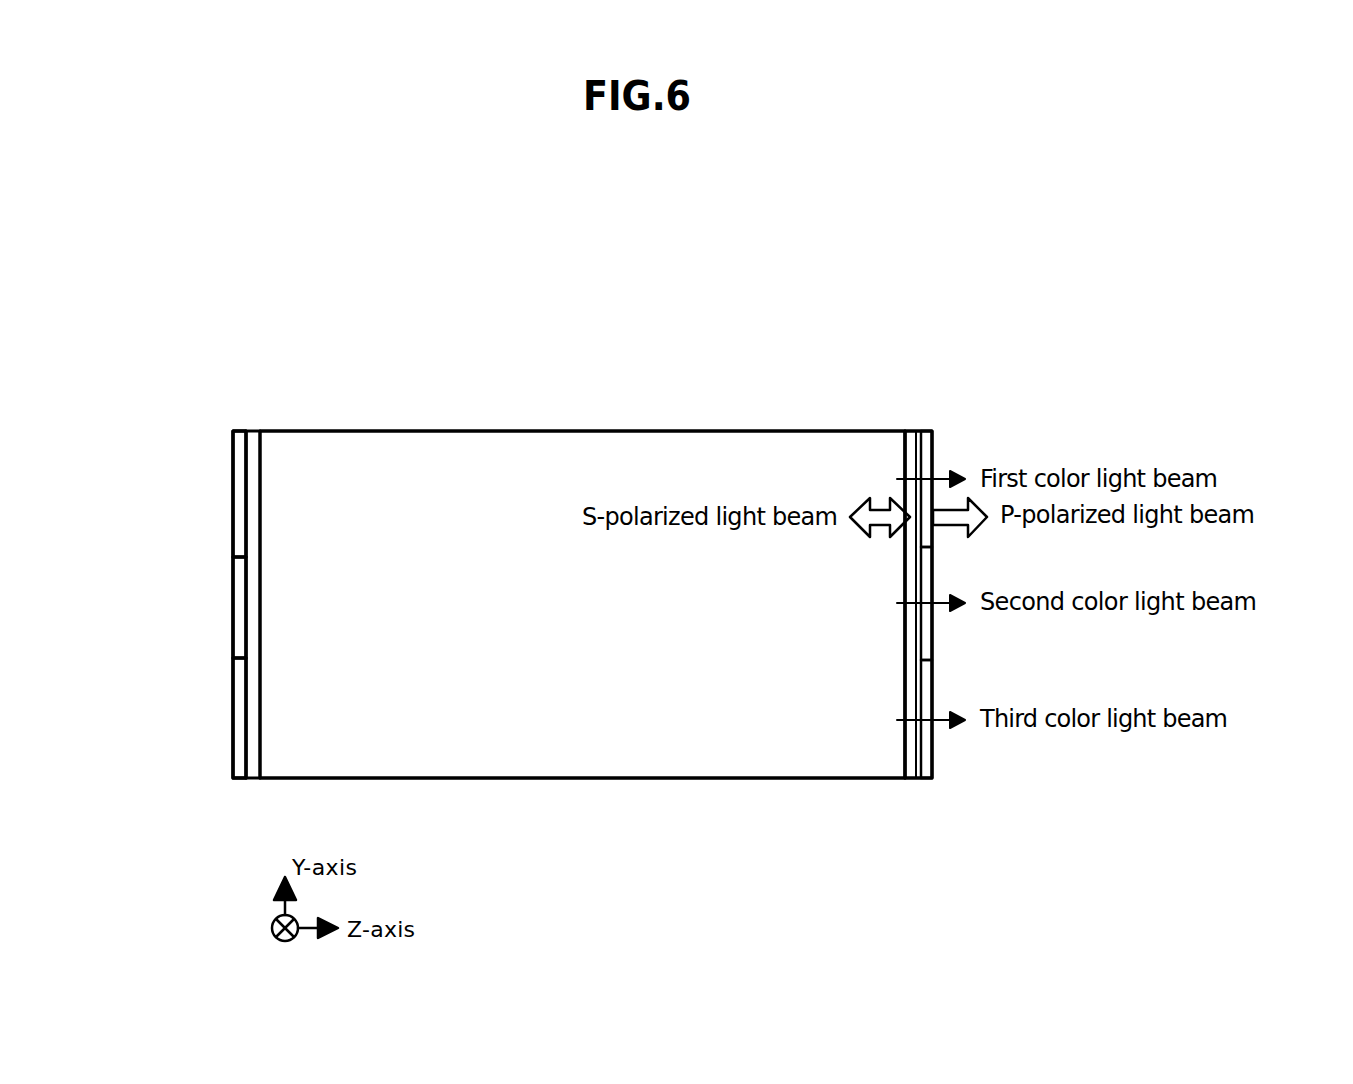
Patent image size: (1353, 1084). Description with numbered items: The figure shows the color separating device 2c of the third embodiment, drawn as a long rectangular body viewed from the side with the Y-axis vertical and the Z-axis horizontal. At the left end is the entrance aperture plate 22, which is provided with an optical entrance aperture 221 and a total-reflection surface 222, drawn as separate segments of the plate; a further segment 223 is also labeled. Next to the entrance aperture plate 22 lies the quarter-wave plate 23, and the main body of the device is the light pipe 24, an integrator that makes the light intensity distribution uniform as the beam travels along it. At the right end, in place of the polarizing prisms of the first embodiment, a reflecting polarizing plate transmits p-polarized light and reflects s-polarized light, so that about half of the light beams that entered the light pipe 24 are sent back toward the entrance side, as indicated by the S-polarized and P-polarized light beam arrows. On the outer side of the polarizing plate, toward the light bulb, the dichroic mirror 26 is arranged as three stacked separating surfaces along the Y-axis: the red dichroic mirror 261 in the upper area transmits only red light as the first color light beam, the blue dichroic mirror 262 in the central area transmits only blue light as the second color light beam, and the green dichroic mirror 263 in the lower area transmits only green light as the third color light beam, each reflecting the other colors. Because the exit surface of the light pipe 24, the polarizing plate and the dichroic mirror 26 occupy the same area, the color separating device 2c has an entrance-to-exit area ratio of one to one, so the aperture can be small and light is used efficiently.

The color separating device 2c is at (918, 296).
The entrance aperture plate 22 is at (377, 467).
The optical entrance aperture 221 is at (230, 577).
The total-reflection surface 222 is at (238, 690).
The reflective portion 223 is at (238, 510).
The quarter-wave plate 23 is at (253, 447).
The light pipe 24 is at (473, 455).
The dichroic mirror 26 is at (952, 403).
The red dichroic mirror 261 is at (933, 445).
The blue dichroic mirror 262 is at (933, 570).
The green dichroic mirror 263 is at (933, 688).